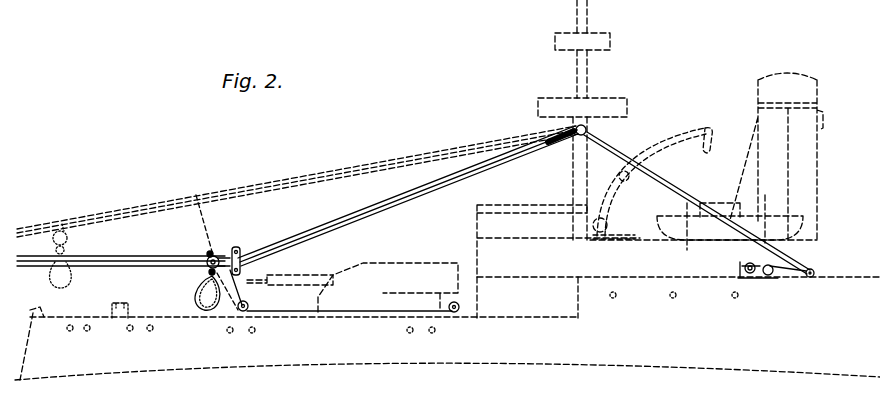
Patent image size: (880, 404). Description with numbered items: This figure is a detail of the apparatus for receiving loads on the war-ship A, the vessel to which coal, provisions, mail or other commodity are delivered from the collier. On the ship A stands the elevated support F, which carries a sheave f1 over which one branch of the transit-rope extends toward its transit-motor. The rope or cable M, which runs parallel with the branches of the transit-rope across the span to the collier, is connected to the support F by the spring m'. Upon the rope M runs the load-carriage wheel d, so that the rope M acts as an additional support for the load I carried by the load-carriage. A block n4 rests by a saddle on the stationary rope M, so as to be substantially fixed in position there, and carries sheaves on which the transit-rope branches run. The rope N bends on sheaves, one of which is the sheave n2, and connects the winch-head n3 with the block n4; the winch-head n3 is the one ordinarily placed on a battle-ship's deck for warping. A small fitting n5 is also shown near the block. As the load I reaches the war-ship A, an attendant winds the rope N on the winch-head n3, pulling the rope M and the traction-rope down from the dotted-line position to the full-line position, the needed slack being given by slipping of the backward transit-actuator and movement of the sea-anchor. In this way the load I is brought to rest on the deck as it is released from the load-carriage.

The ship A is at (447, 226).
The elevated support F is at (580, 153).
The sheave f1 is at (588, 129).
The rope M is at (320, 224).
The spring m' is at (539, 127).
The load-carriage wheel d is at (211, 235).
The load I is at (205, 290).
The block n4 is at (234, 250).
The link n5 is at (238, 260).
The sheave n2 is at (240, 311).
The rope N is at (336, 315).
The winch-head n3 is at (453, 314).